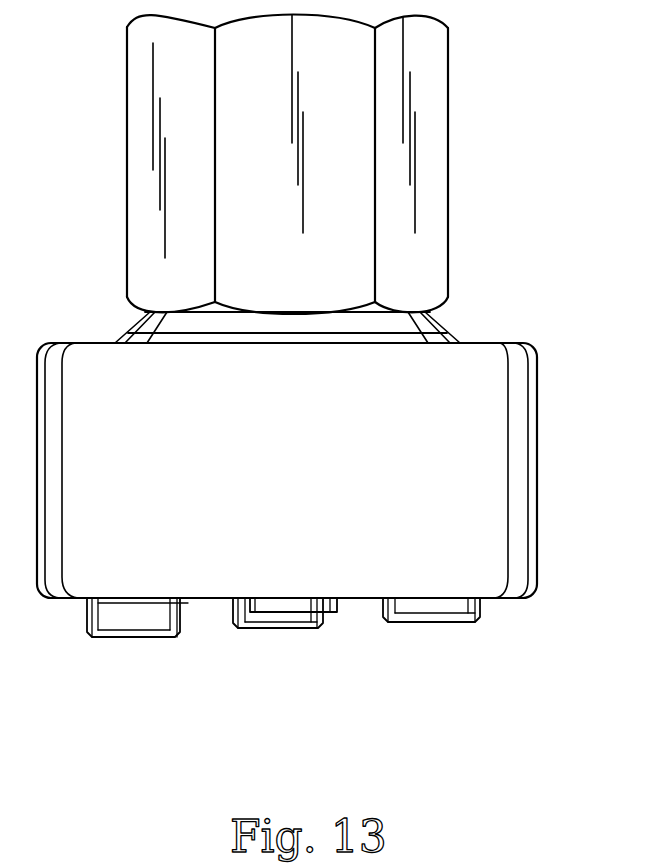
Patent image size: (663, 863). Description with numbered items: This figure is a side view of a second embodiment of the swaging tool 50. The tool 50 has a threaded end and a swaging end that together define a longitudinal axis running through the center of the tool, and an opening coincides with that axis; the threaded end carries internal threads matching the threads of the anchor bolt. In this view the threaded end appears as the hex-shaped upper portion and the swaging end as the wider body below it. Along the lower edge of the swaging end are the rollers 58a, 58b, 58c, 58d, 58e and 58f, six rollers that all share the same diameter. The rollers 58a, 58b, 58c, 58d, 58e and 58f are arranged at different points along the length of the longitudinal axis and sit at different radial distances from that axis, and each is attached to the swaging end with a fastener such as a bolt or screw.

The swaging tool 50 is at (448, 180).
The roller 58a is at (188, 603).
The roller 58b is at (337, 603).
The roller 58c is at (482, 605).
The roller 58d is at (455, 622).
The roller 58e is at (260, 628).
The roller 58f is at (102, 637).